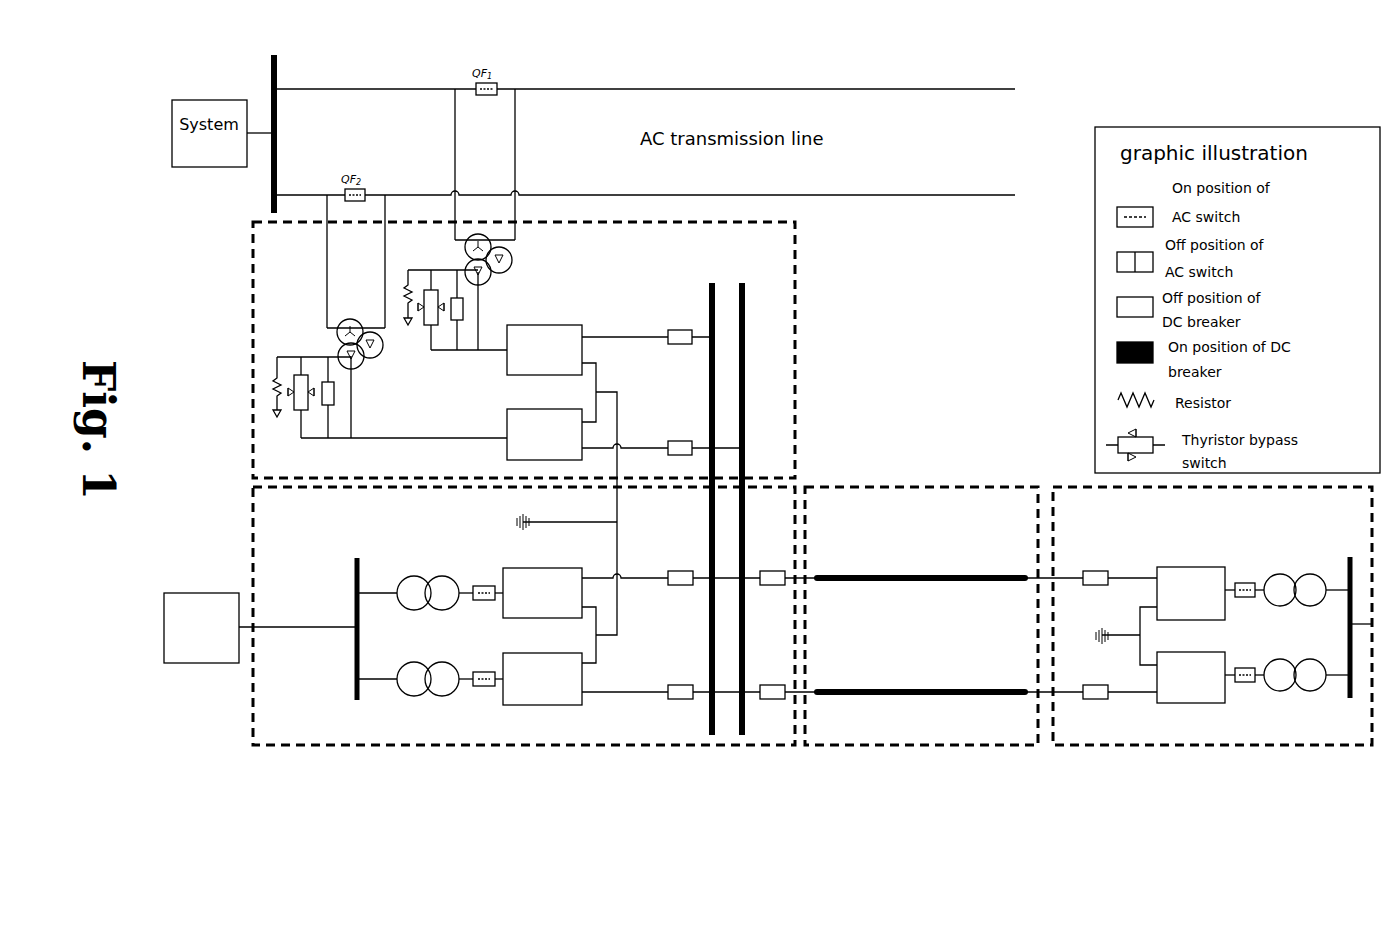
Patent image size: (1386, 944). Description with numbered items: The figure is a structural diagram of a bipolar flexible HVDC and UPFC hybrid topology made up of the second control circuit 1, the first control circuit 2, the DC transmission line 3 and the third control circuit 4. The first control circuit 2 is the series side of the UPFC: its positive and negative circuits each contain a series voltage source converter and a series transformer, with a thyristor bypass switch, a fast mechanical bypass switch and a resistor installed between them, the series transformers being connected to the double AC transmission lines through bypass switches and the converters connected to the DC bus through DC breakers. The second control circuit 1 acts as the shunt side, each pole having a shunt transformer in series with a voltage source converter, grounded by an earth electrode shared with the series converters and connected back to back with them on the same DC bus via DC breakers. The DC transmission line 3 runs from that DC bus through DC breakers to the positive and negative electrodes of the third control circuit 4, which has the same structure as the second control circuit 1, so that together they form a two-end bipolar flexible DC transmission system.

The second control circuit 1 is at (490, 629).
The first control circuit 2 is at (524, 350).
The DC transmission line 3 is at (944, 616).
The third control circuit 4 is at (1212, 616).